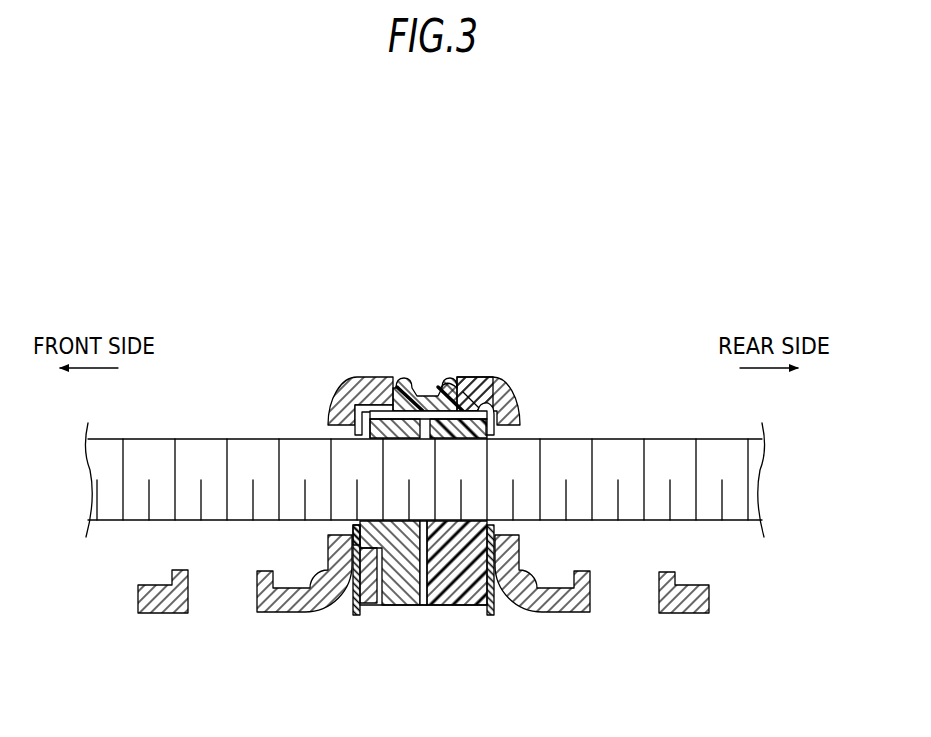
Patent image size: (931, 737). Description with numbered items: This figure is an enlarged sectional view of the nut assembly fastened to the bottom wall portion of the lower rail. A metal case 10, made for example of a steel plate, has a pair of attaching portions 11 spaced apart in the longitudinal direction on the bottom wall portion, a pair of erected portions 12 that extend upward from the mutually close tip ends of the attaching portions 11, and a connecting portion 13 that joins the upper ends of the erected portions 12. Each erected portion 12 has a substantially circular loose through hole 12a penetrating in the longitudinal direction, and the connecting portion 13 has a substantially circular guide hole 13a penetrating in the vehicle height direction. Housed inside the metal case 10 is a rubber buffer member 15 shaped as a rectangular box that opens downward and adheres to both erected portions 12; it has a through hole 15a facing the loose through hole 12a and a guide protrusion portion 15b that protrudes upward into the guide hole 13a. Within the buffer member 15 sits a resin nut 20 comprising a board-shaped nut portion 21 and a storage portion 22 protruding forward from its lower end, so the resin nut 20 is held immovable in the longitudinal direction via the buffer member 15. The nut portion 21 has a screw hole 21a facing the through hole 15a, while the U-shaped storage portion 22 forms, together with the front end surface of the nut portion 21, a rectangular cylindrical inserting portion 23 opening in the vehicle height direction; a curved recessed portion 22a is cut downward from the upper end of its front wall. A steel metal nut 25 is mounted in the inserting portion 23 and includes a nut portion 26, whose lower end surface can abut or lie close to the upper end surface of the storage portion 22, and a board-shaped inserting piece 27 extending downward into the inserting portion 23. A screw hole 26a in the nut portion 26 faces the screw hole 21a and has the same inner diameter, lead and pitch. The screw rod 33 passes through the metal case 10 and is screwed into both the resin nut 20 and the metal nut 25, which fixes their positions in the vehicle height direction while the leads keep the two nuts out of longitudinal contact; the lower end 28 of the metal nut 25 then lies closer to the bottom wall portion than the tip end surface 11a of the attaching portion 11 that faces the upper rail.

The metal case 10 is at (420, 392).
The attaching portions 11 is at (423, 595).
The tip end surface 11a is at (152, 586).
The erected portions 12 is at (336, 545).
The loose through hole 12a is at (330, 426).
The connecting portion 13 is at (470, 388).
The guide hole 13a is at (410, 380).
The buffer member 15 is at (360, 404).
The through hole 15a is at (491, 527).
The guide protrusion portion 15b is at (455, 386).
The resin nut 20 is at (456, 566).
The nut portion 21 is at (487, 410).
The screw hole 21a is at (462, 452).
The storage portion 22 is at (325, 555).
The recessed portion 22a is at (357, 524).
The inserting portion 23 is at (412, 530).
The metal nut 25 is at (421, 606).
The nut portion 26 is at (451, 404).
The screw hole 26a is at (324, 442).
The inserting piece 27 is at (385, 604).
The lower end 28 is at (408, 606).
The screw rod 33 is at (148, 456).